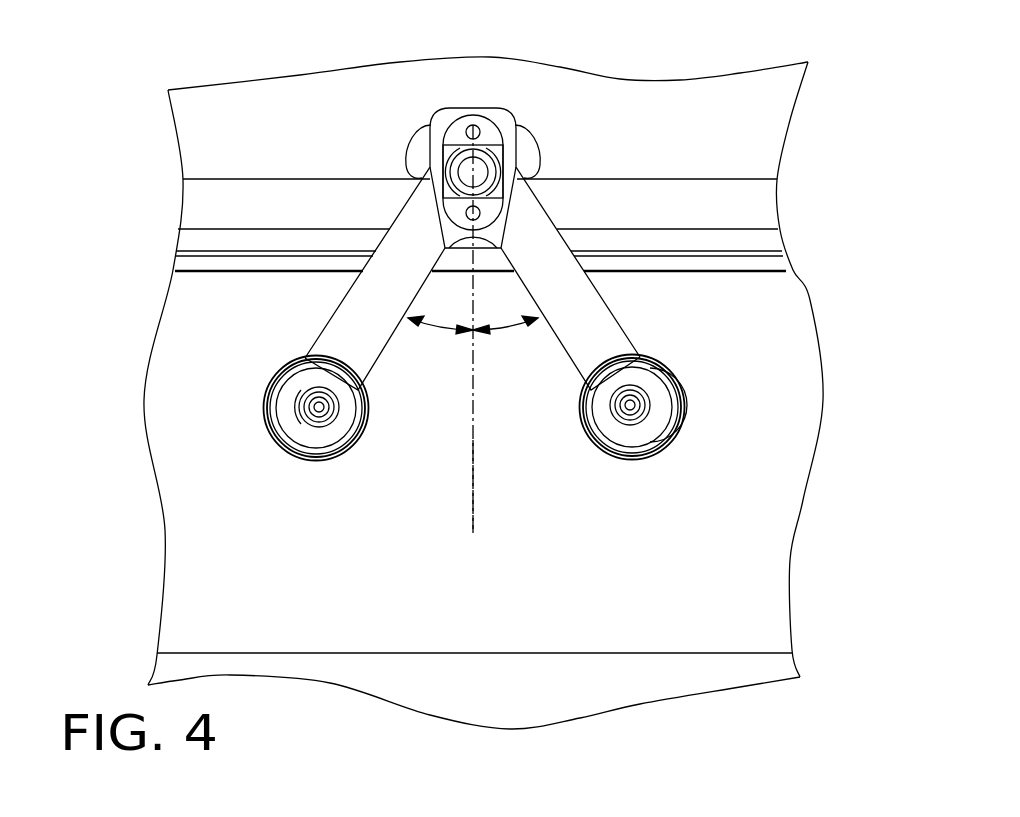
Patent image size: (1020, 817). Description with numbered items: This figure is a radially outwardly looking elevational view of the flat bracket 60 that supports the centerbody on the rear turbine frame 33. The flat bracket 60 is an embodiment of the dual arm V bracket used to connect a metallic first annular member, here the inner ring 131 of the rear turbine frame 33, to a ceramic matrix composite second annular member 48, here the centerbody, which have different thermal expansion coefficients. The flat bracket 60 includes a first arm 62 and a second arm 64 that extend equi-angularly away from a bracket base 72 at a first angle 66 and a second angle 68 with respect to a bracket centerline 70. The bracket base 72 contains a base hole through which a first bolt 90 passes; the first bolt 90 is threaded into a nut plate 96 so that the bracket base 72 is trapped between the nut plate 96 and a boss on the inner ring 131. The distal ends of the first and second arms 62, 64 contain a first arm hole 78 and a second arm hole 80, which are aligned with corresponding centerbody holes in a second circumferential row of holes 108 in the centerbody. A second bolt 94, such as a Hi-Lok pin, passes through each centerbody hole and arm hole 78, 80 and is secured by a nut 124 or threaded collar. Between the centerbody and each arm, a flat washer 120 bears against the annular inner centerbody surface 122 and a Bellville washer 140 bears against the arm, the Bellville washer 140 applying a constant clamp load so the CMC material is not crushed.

The rear turbine frame 33 is at (797, 87).
The inner ring 131 is at (781, 203).
The second annular member 48 is at (812, 307).
The annular inner centerbody surface 122 is at (752, 553).
The flat bracket 60 is at (546, 212).
The first arm 62 is at (372, 367).
The second arm 64 is at (623, 334).
The first angle 66 is at (438, 330).
The second angle 68 is at (508, 330).
The bracket centerline 70 is at (477, 517).
The bracket base 72 is at (534, 168).
The first arm hole 78 is at (307, 447).
The second arm hole 80 is at (612, 453).
The first bolt 90 is at (476, 163).
The second bolt 94 is at (335, 407).
The nut plate 96 is at (497, 157).
The second circumferential row of holes 108 is at (670, 387).
The flat washer 120 is at (680, 433).
The nut 124 is at (288, 364).
The Bellville washer 140 is at (660, 450).